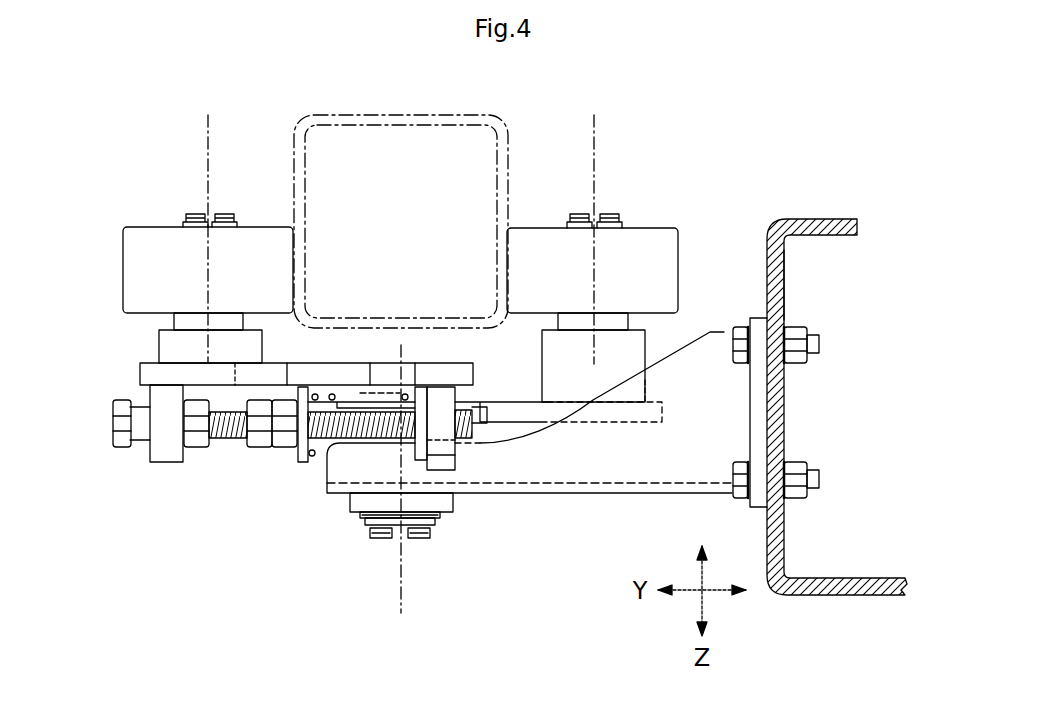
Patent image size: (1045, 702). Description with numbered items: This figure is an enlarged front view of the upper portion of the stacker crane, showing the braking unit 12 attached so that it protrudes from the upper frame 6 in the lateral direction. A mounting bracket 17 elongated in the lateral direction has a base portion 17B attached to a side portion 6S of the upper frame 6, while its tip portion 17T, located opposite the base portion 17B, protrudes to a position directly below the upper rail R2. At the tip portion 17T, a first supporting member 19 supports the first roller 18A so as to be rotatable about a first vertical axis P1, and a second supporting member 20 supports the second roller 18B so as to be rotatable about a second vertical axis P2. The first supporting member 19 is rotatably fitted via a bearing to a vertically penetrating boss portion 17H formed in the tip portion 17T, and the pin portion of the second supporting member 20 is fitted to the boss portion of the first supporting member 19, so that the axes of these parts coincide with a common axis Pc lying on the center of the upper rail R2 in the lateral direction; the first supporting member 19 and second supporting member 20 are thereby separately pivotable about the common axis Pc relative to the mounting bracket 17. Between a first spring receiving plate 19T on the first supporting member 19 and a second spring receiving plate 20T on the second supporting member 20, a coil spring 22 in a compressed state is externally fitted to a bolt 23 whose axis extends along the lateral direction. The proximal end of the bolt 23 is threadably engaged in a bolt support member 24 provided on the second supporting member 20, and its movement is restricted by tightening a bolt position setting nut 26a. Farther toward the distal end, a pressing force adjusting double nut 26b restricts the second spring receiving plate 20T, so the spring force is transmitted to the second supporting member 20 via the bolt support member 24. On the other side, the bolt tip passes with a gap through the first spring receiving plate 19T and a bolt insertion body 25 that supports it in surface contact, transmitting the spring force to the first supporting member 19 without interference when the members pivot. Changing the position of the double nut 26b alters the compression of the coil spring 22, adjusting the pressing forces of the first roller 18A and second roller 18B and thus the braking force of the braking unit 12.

The braking unit 12 is at (662, 125).
The upper frame 6 is at (823, 220).
The side portion 6S is at (785, 268).
The mounting bracket 17 is at (530, 465).
The base portion 17B is at (758, 413).
The boss portion 17H is at (447, 502).
The tip portion 17T is at (360, 473).
The first roller 18A is at (647, 240).
The second roller 18B is at (127, 245).
The first supporting member 19 is at (513, 402).
The first spring receiving plate 19T is at (417, 463).
The second supporting member 20 is at (138, 362).
The second spring receiving plate 20T is at (300, 462).
The coil spring 22 is at (313, 457).
The bolt 23 is at (140, 438).
The bolt support member 24 is at (165, 448).
The bolt insertion body 25 is at (447, 460).
The bolt position setting nut 26a is at (198, 447).
The pressing force adjusting double nut 26b is at (282, 445).
The first vertical axis P1 is at (589, 225).
The second vertical axis P2 is at (208, 223).
The common axis Pc is at (396, 504).
The upper rail R2 is at (418, 112).